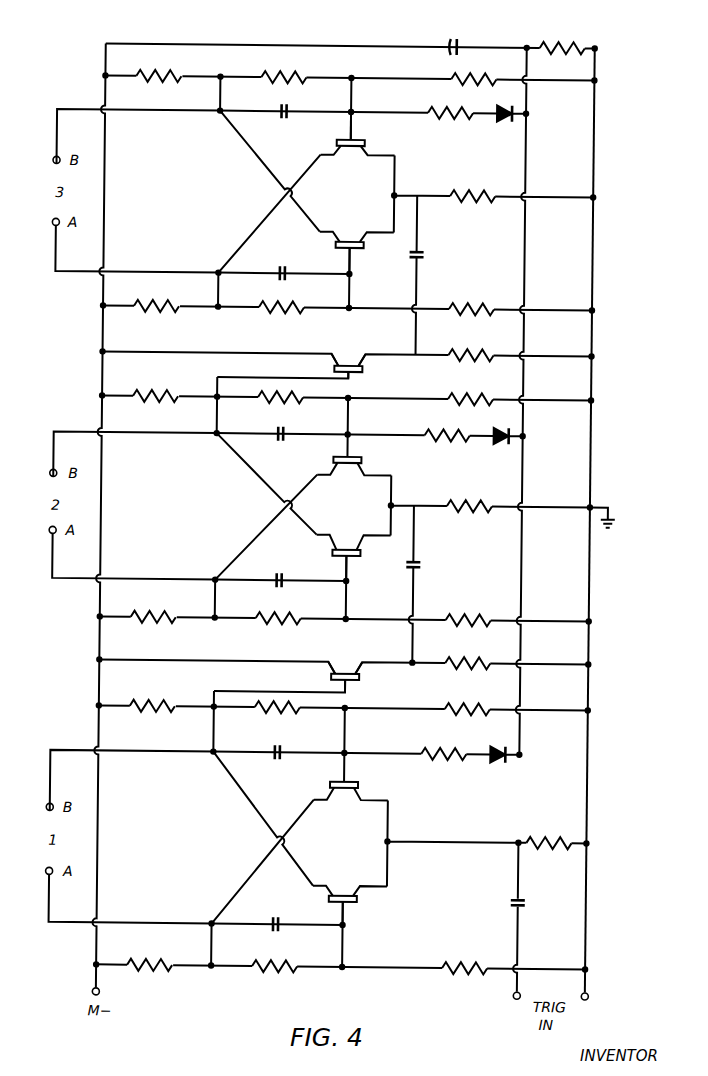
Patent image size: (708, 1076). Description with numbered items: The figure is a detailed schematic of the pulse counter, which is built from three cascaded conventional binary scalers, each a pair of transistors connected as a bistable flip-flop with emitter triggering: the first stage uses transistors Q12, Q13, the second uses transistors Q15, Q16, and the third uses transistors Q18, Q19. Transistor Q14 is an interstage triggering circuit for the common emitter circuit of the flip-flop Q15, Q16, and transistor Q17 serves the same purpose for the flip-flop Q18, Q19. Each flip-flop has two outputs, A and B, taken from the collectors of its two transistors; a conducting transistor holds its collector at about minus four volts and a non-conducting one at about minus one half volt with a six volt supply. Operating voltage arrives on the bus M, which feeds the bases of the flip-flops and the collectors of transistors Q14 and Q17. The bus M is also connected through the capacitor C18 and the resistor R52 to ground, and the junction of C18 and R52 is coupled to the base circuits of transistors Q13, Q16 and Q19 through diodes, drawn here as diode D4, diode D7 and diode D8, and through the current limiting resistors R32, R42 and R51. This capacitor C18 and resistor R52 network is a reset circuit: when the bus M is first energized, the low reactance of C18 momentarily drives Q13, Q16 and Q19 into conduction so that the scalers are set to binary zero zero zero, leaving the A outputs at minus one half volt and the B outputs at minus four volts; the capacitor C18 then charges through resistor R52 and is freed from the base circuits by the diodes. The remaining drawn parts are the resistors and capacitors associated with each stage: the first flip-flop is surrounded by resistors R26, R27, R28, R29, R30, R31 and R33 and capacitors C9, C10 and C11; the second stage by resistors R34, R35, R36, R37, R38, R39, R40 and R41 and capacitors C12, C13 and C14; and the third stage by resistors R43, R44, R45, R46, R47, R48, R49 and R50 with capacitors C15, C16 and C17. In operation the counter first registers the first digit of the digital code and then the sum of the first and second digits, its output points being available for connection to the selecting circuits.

The capacitor C18 is at (448, 34).
The resistor R52 is at (535, 36).
The resistor R48 is at (144, 72).
The resistor R49 is at (262, 71).
The resistor R50 is at (456, 72).
The current limiting resistor R51 is at (434, 106).
The diode D8 is at (500, 120).
The capacitor C17 is at (285, 120).
The transistor Q19 is at (356, 138).
The resistor R44 is at (490, 200).
The capacitor C15 is at (423, 256).
The capacitor C16 is at (281, 267).
The transistor Q18 is at (352, 252).
The resistor R47 is at (174, 313).
The resistor R46 is at (268, 313).
The resistor R45 is at (470, 313).
The transistor Q17 is at (359, 362).
The resistor R43 is at (490, 359).
The resistor R41 is at (174, 403).
The resistor R40 is at (267, 403).
The resistor R39 is at (490, 403).
The capacitor C14 is at (285, 443).
The current limiting resistor R42 is at (440, 440).
The diode D7 is at (498, 440).
The transistor Q16 is at (348, 466).
The transistor Q15 is at (350, 546).
The resistor R38 is at (452, 510).
The capacitor C12 is at (423, 566).
The capacitor C13 is at (270, 572).
The resistor R37 is at (174, 624).
The resistor R36 is at (272, 624).
The resistor R35 is at (452, 624).
The transistor Q14 is at (357, 672).
The resistor R34 is at (452, 667).
The resistor R29 is at (140, 713).
The resistor R30 is at (268, 713).
The resistor R31 is at (452, 713).
The capacitor C11 is at (280, 762).
The current limiting resistor R32 is at (460, 758).
The diode D4 is at (498, 761).
The transistor Q13 is at (348, 791).
The transistor Q12 is at (350, 892).
The resistor R33 is at (573, 846).
The capacitor C9 is at (506, 900).
The capacitor C10 is at (292, 918).
The resistor R26 is at (177, 972).
The resistor R27 is at (301, 972).
The resistor R28 is at (490, 972).